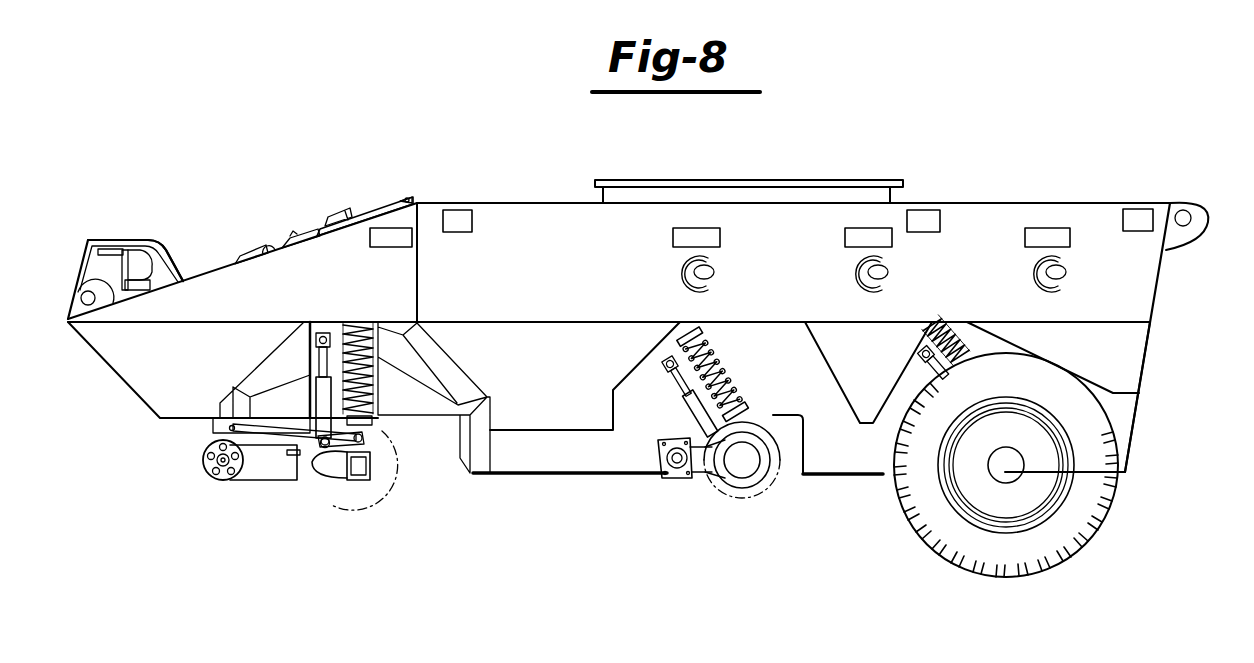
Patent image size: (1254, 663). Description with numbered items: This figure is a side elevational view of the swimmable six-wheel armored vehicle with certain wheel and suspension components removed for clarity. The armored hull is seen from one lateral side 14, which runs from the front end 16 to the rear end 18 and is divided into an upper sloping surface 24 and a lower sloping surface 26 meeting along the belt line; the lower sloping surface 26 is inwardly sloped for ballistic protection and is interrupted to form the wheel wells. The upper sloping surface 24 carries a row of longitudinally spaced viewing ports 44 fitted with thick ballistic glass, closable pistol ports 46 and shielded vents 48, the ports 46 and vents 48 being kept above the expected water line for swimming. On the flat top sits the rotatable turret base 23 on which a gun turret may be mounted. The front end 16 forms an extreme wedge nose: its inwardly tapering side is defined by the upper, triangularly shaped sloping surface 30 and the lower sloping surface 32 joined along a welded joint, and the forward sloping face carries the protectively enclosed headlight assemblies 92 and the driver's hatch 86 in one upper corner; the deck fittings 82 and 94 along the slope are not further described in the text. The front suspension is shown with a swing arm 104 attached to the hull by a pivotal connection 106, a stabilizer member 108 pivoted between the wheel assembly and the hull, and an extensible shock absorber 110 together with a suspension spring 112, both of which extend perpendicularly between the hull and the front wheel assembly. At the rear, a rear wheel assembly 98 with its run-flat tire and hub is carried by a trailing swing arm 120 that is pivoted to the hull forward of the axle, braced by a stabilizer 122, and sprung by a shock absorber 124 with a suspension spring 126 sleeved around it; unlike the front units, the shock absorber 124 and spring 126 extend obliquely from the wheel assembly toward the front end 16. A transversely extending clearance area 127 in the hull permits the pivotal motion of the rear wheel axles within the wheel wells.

The lateral side 14 is at (975, 221).
The front end 16 is at (117, 228).
The rear end 18 is at (1158, 312).
The rotatable turret base 23 is at (855, 183).
The upper sloping surface 24 is at (623, 291).
The lower sloping surface 26 is at (576, 386).
The upper triangularly shaped sloping surface 30 is at (313, 300).
The lower sloping surface 32 is at (209, 363).
The viewing port 44 is at (372, 247).
The pistol port 46 is at (1033, 273).
The shielded vent 48 is at (472, 222).
The deck mount 82 is at (330, 222).
The driver's hatch 86 is at (368, 212).
The headlight assembly 92 is at (153, 226).
The deck fitting 94 is at (246, 250).
The rear wheel assembly 98 is at (948, 546).
The swing arm 104 is at (262, 462).
The pivotal connection 106 is at (218, 478).
The stabilizer member 108 is at (267, 428).
The extensible shock absorber 110 is at (327, 410).
The suspension spring 112 is at (378, 398).
The trailing swing arm 120 is at (700, 470).
The stabilizer 122 is at (688, 410).
The shock absorber 124 is at (723, 390).
The suspension spring 126 is at (723, 362).
The clearance area 127 is at (792, 452).